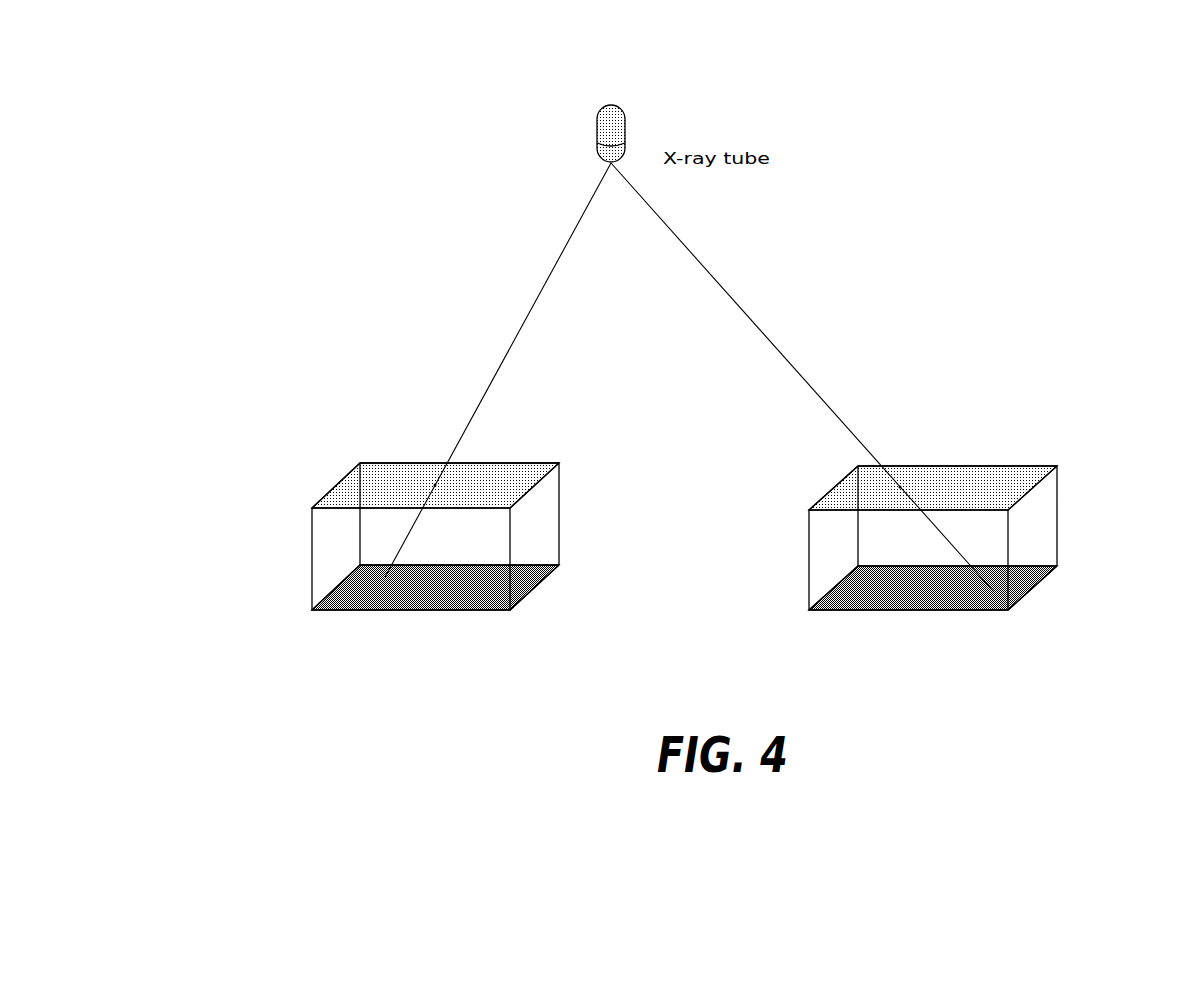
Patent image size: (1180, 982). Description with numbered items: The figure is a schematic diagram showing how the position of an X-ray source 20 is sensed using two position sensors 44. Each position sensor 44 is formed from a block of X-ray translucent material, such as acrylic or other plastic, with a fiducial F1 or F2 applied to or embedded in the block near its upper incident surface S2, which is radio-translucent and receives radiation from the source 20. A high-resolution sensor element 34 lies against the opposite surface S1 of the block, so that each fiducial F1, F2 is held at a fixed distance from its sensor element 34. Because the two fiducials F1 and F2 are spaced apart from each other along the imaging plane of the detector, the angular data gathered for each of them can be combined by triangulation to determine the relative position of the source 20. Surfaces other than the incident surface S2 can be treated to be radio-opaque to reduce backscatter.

The source 20 is at (607, 127).
The position sensor 44 is at (312, 555).
The sensor element 34 is at (709, 632).
The surface S1 is at (477, 610).
The incident surface S2 is at (513, 465).
The fiducial F1 is at (435, 485).
The fiducial F2 is at (900, 487).